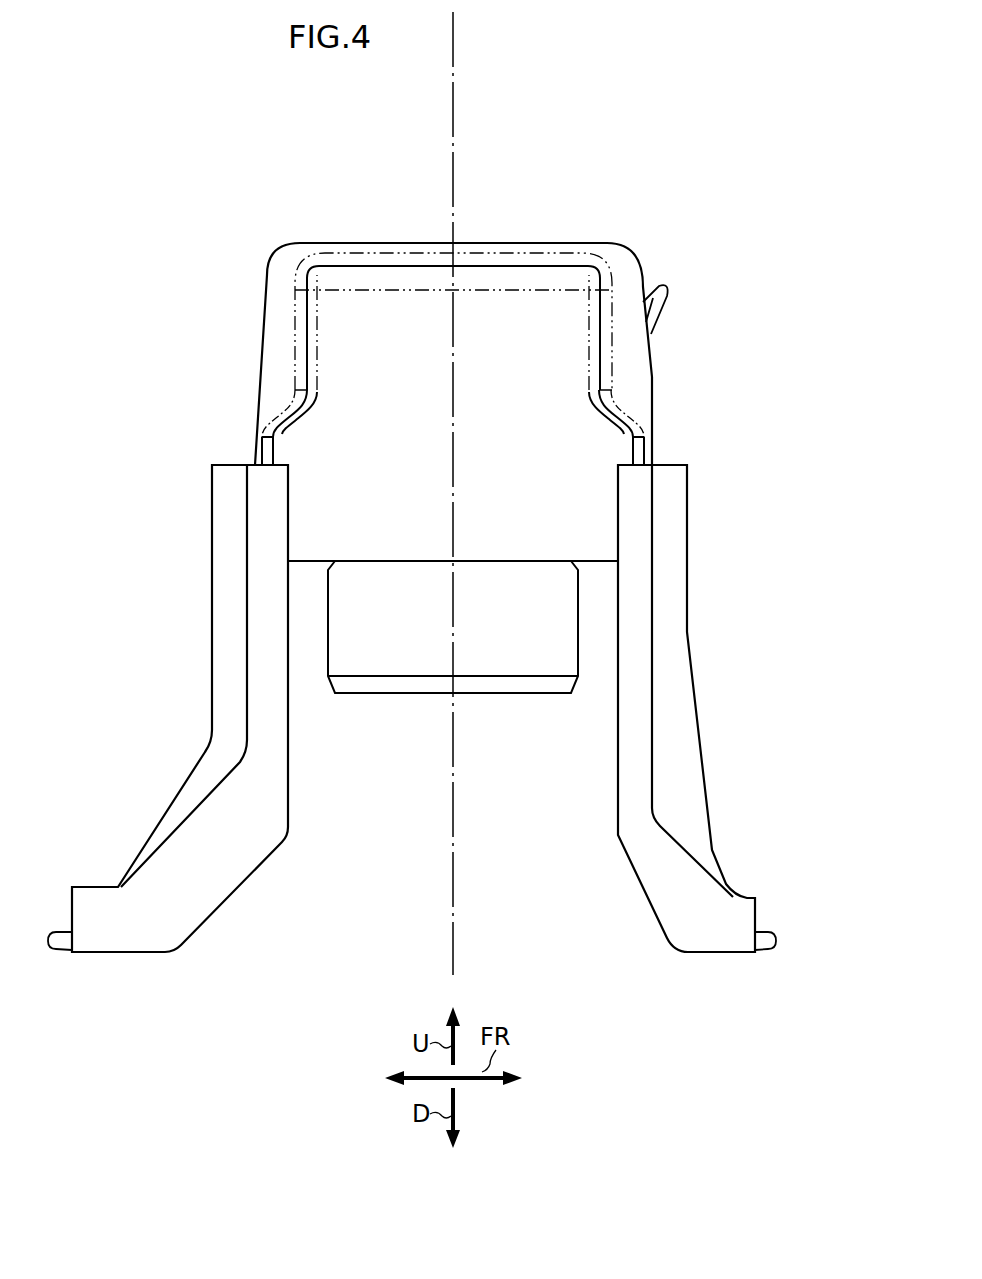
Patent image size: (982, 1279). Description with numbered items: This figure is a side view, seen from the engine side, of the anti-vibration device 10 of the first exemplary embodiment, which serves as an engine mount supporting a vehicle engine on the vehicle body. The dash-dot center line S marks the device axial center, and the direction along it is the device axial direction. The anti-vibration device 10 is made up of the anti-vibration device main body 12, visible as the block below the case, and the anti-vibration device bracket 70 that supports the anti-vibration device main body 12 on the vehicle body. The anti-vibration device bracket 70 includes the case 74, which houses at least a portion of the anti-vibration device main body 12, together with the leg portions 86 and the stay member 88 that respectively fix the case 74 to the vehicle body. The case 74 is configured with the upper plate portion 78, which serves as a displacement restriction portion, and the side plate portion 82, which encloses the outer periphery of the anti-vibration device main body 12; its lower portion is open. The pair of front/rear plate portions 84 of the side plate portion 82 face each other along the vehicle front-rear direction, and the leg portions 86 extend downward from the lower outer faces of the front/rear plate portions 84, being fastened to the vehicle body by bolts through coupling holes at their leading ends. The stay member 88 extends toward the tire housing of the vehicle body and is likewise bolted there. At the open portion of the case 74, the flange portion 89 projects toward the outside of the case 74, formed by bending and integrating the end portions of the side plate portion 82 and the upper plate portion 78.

The device axial center S is at (453, 45).
The anti-vibration device 10 is at (408, 890).
The anti-vibration device main body 12 is at (421, 697).
The anti-vibration device bracket 70 is at (328, 826).
The case 74 is at (388, 353).
The upper plate portion 78 is at (386, 264).
The side plate portion 82 is at (307, 563).
The front/rear plate portions 84 is at (284, 371).
The leg portions 86 is at (209, 688).
The stay member 88 is at (676, 296).
The flange portion 89 is at (634, 243).